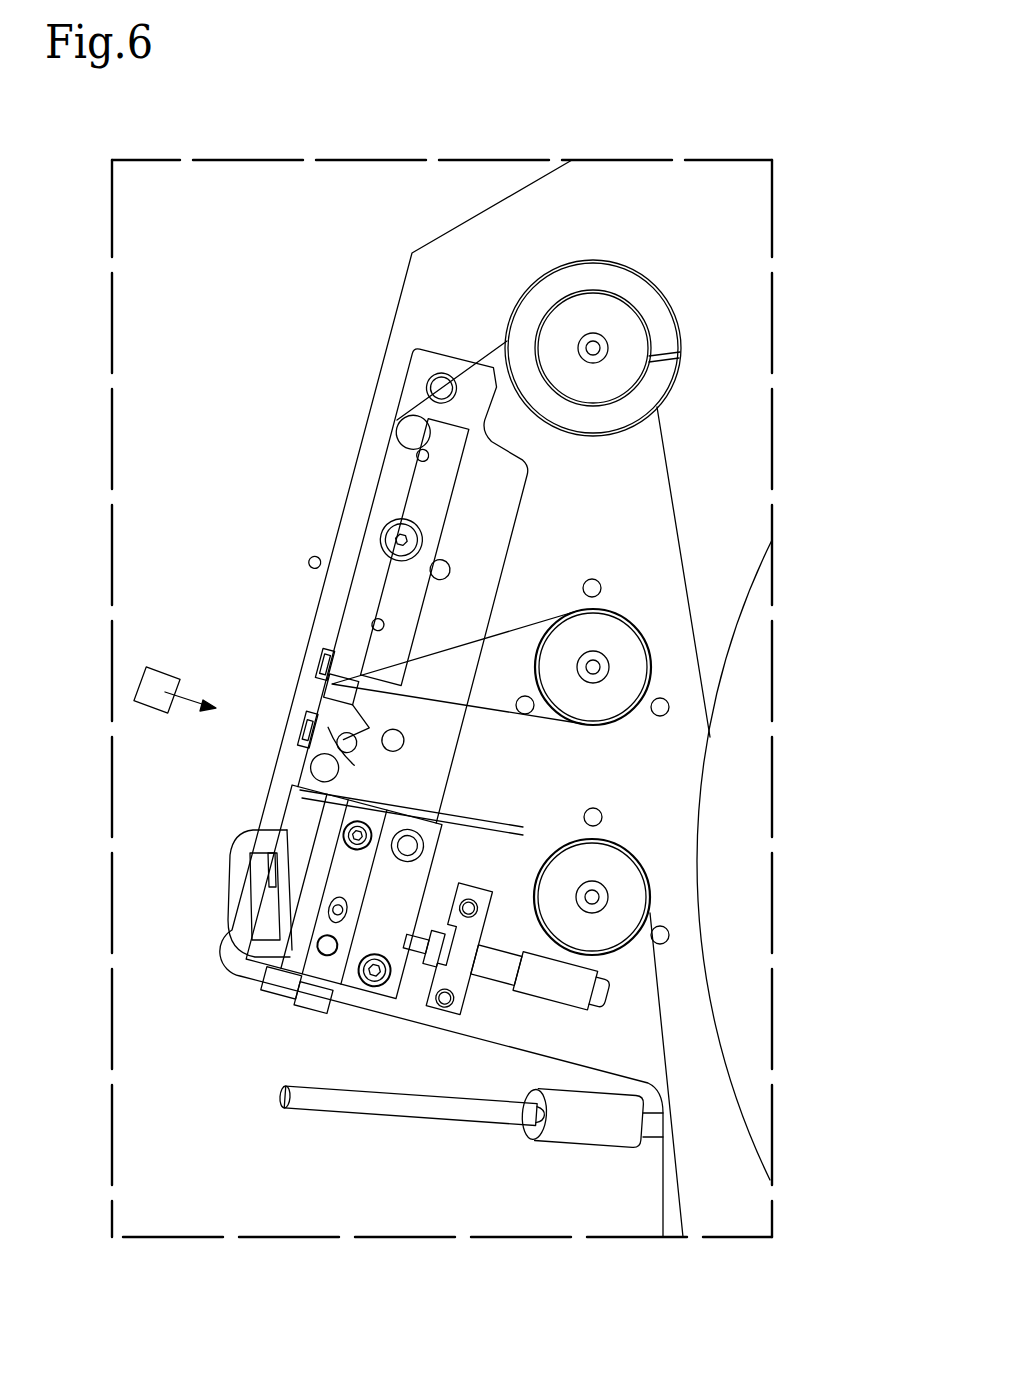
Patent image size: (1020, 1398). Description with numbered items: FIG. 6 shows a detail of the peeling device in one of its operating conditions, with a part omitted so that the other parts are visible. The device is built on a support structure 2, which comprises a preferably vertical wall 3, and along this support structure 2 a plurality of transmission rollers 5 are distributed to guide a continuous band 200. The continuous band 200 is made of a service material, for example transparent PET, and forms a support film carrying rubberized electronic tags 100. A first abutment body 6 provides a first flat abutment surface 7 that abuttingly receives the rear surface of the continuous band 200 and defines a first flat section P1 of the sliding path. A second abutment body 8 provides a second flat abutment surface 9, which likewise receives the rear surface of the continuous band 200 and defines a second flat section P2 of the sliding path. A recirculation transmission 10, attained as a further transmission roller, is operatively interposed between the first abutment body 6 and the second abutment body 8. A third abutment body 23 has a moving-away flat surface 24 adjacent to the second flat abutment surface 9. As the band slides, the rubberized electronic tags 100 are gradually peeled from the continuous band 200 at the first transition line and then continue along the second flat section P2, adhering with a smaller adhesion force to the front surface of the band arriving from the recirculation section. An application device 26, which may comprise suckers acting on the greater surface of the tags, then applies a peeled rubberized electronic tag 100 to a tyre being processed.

The support structure 2 is at (724, 243).
The vertical wall 3 is at (723, 308).
The transmission roller 5 is at (605, 314).
The first abutment body 6 is at (405, 477).
The first flat abutment surface 7 is at (375, 493).
The second abutment body 8 is at (335, 772).
The second flat abutment surface 9 is at (325, 700).
The recirculation transmission 10 is at (623, 653).
The third abutment body 23 is at (283, 917).
The moving-away flat surface 24 is at (287, 832).
The application device 26 is at (153, 680).
The rubberized electronic tag 100 is at (326, 648).
The continuous band 200 is at (680, 481).
The first flat section P1 is at (358, 545).
The second flat section P2 is at (303, 762).